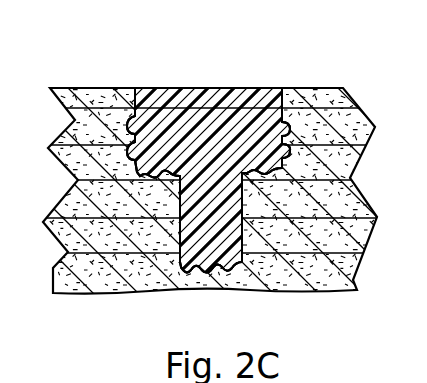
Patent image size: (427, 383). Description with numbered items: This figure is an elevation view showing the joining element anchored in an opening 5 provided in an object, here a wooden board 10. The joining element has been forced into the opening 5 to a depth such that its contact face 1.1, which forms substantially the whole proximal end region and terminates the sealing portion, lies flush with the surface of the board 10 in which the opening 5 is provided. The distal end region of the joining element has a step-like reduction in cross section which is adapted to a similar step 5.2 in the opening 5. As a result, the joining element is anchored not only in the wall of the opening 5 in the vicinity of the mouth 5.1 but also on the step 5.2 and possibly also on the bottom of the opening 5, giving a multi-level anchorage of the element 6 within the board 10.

The contact face 1.1 is at (236, 79).
The opening 5 is at (165, 217).
The mouth 5.1 is at (135, 78).
The step 5.2 is at (276, 190).
The filling element 6 is at (163, 110).
The wooden board 10 is at (316, 113).